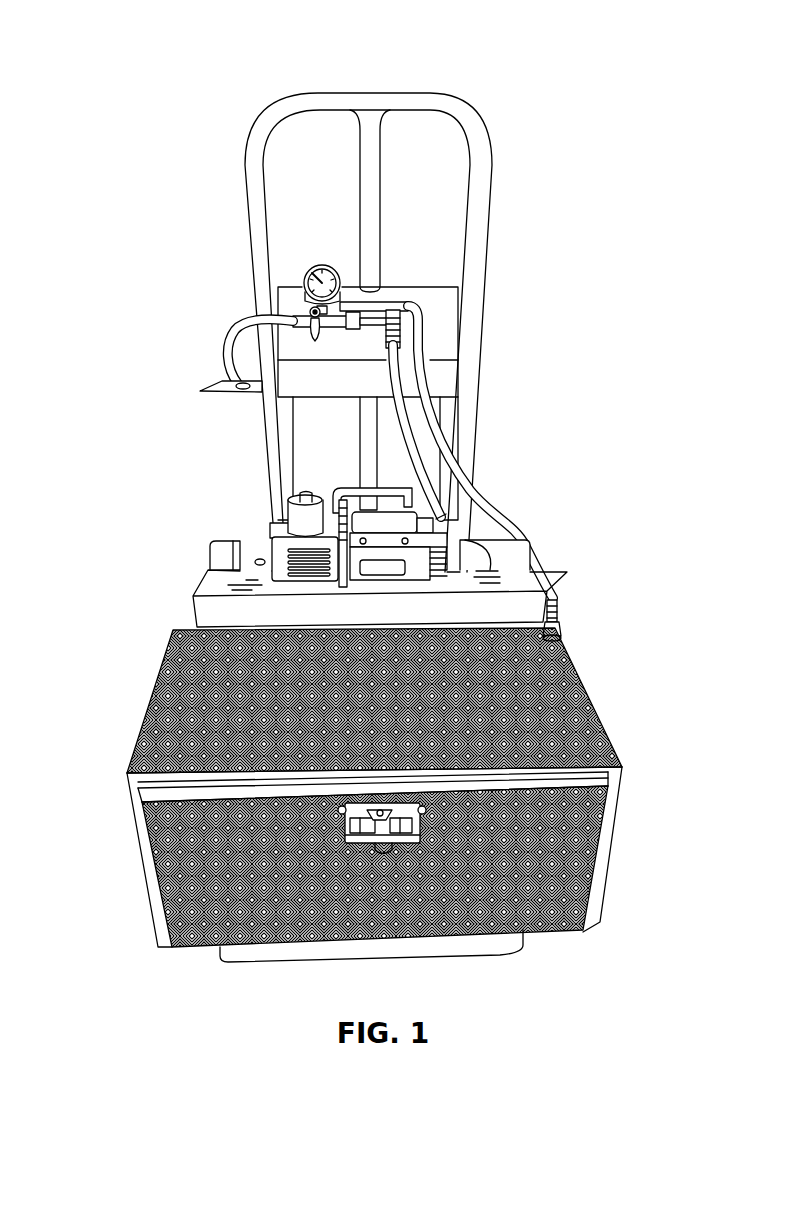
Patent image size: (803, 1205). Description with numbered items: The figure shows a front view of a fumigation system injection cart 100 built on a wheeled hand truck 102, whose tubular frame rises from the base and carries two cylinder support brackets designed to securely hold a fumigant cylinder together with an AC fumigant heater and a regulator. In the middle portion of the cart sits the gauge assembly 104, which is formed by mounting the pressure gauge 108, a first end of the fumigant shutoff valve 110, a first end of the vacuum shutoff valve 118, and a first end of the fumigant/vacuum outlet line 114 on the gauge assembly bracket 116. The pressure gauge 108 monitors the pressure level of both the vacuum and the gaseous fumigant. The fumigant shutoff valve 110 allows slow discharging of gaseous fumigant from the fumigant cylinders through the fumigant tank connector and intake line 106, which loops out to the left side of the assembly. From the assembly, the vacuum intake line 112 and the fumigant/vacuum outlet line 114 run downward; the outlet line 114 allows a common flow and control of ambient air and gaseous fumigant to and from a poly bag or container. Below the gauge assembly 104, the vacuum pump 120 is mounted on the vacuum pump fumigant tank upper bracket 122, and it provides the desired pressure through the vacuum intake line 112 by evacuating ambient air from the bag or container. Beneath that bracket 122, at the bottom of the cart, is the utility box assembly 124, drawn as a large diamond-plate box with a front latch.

The fumigation system injection cart 100 is at (143, 92).
The wheeled hand truck 102 is at (490, 140).
The gauge assembly 104 is at (385, 290).
The fumigant tank connector and intake line 106 is at (227, 342).
The pressure gauge 108 is at (303, 282).
The fumigant shutoff valve 110 is at (297, 333).
The vacuum intake line 112 is at (417, 442).
The fumigant/vacuum outlet line 114 is at (493, 507).
The gauge assembly bracket 116 is at (447, 318).
The vacuum shutoff valve 118 is at (370, 337).
The vacuum pump 120 is at (282, 568).
The vacuum pump fumigant tank upper bracket 122 is at (517, 613).
The utility box assembly 124 is at (593, 707).